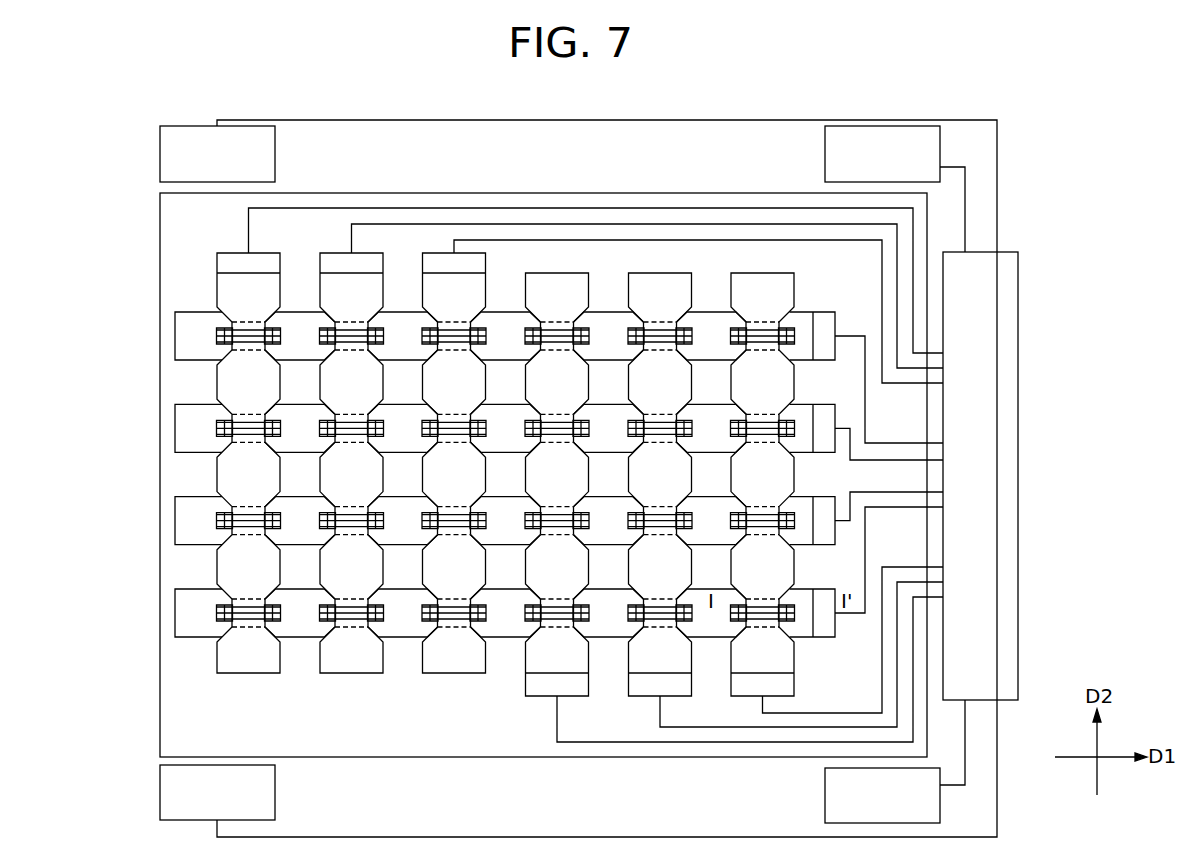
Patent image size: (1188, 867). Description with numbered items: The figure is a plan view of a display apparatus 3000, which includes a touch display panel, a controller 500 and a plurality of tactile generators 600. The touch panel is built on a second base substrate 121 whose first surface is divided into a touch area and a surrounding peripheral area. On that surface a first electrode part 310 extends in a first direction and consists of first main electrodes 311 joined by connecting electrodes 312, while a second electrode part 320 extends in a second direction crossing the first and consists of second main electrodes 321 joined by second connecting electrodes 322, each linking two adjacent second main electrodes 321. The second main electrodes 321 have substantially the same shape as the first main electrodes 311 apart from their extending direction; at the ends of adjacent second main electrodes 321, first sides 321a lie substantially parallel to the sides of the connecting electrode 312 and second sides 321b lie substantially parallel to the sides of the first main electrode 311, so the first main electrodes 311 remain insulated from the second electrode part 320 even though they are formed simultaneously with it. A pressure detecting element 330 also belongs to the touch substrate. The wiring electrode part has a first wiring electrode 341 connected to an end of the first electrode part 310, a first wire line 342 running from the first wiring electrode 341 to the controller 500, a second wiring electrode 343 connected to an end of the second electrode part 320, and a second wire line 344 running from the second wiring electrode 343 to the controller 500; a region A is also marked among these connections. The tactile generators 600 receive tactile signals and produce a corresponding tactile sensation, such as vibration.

The display apparatus 3000 is at (578, 120).
The second base substrate 121 is at (500, 193).
The controller 500 is at (1015, 252).
The tactile generator 600 is at (940, 811).
The first electrode part 310 is at (97, 355).
The first main electrode 311 is at (175, 342).
The connecting electrode 312 is at (218, 335).
The second electrode part 320 is at (275, 726).
The second main electrode 321 is at (423, 490).
The first side 321a is at (220, 480).
The second side 321b is at (247, 503).
The second connecting electrode 322 is at (222, 601).
The pressure detecting element 330 is at (283, 605).
The first wiring electrode 341 is at (826, 628).
The first wire line 342 is at (850, 617).
The second wiring electrode 343 is at (542, 683).
The second wire line 344 is at (597, 742).
The enlarged region A is at (832, 570).